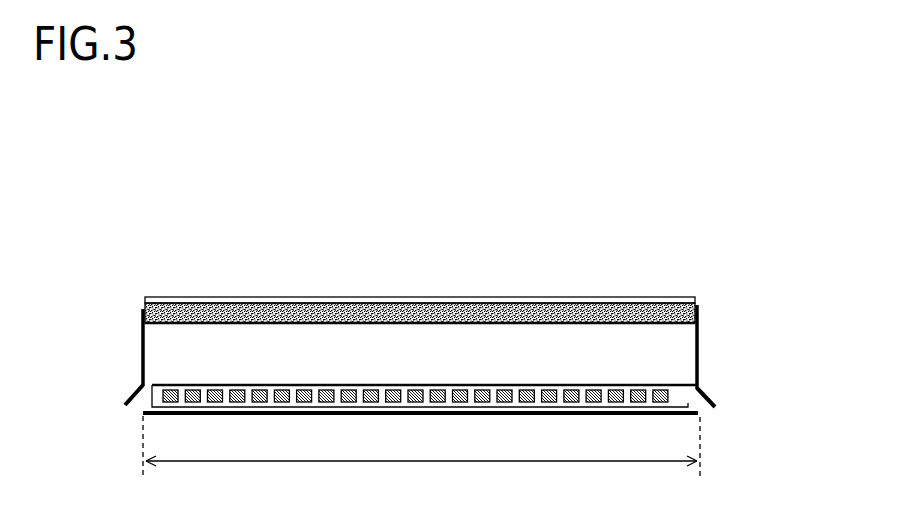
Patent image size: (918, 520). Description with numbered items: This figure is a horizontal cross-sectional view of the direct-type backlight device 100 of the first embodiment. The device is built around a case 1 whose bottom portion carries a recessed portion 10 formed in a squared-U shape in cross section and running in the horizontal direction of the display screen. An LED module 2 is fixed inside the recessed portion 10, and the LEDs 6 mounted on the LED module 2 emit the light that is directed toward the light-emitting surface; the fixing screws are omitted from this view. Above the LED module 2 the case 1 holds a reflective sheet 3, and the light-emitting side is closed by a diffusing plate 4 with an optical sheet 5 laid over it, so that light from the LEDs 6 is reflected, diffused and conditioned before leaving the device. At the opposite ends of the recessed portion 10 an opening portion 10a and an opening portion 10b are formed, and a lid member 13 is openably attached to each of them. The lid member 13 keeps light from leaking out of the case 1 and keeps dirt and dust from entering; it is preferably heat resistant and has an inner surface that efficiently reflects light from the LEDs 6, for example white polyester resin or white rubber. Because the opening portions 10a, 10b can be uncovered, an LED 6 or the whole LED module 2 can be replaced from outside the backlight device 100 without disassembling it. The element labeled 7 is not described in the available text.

The backlight device 100 is at (653, 277).
The case 1 is at (142, 337).
The LED module 2 is at (763, 320).
The reflective sheet 3 is at (518, 383).
The diffusing plate 4 is at (222, 305).
The optical sheet 5 is at (192, 297).
The LED 6 is at (699, 387).
The substrate 7 is at (688, 397).
The recessed portion 10 is at (284, 413).
The opening portion 10a is at (132, 410).
The opening portion 10b is at (704, 410).
The lid member 13 is at (124, 398).